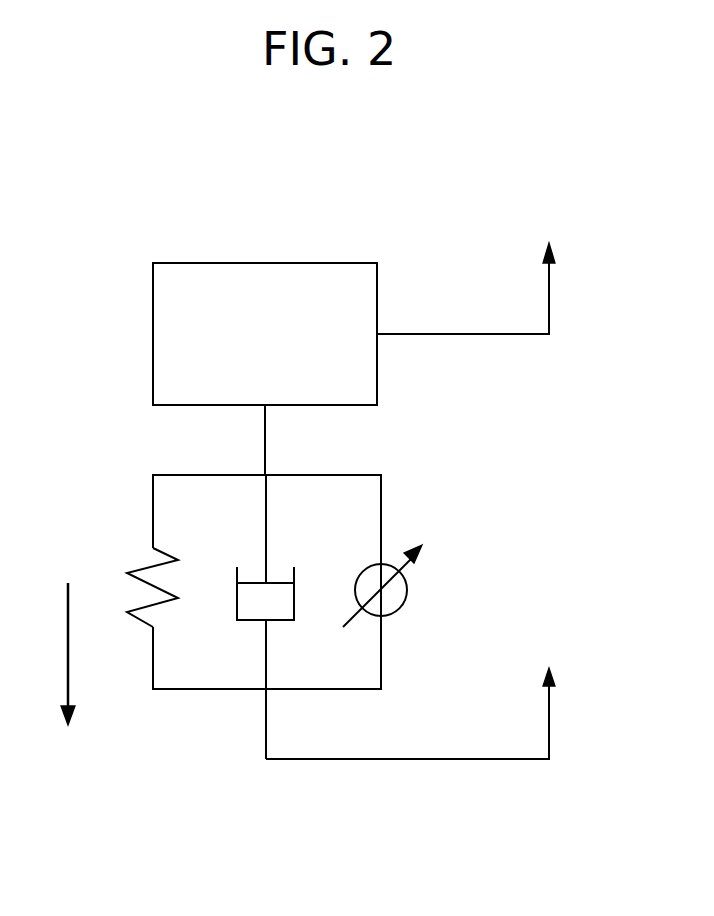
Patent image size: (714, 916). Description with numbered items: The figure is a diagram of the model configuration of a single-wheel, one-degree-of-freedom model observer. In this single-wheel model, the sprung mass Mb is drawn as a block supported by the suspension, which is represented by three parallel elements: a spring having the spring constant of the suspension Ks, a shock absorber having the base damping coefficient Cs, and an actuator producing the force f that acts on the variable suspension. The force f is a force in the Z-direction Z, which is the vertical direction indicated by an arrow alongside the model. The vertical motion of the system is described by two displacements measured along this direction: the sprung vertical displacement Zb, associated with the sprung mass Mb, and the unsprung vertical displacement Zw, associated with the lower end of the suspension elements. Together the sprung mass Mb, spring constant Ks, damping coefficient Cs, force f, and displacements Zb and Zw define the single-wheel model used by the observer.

The sprung mass Mb is at (265, 334).
The spring constant of the suspension Ks is at (169, 570).
The base damping coefficient of the shock absorber Cs is at (277, 567).
The force in the Z-direction f is at (394, 586).
The Z-direction Z is at (55, 654).
The sprung vertical displacement Zb is at (488, 288).
The unsprung vertical displacement Zw is at (434, 713).